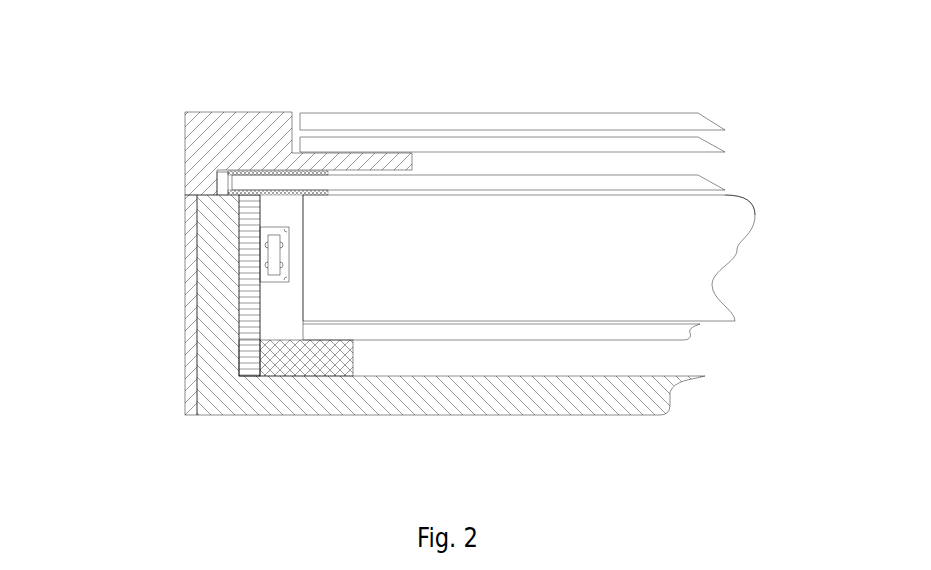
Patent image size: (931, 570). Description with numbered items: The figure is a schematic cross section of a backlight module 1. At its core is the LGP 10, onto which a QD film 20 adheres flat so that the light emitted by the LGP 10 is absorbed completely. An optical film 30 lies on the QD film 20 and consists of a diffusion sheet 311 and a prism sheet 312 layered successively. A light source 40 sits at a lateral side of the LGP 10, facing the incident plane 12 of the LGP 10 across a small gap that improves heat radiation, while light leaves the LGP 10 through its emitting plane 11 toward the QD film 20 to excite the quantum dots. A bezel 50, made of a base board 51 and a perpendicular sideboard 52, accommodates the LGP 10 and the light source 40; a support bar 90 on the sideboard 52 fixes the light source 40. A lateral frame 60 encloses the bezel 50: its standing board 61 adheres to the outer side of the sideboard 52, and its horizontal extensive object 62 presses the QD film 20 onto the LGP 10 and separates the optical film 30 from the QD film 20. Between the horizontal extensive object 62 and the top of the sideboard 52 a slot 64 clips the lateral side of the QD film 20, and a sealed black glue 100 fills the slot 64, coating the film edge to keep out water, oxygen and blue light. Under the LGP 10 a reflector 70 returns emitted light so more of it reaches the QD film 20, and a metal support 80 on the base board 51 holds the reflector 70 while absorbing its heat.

The backlight module 1 is at (447, 260).
The LGP 10 is at (737, 250).
The emitting plane 11 is at (753, 215).
The incident plane 12 is at (300, 296).
The QD film 20 is at (698, 175).
The optical film 30 is at (792, 95).
The diffusion sheet 311 is at (698, 137).
The prism sheet 312 is at (698, 113).
The light source 40 is at (262, 250).
The bezel 50 is at (118, 315).
The base board 51 is at (240, 396).
The sideboard 52 is at (212, 350).
The lateral frame 60 is at (108, 163).
The standing board 61 is at (187, 232).
The horizontal extensive object 62 is at (187, 186).
The slot 64 is at (218, 173).
The reflector 70 is at (700, 330).
The support 80 is at (332, 372).
The support bar 90 is at (250, 370).
The sealed black glue 100 is at (233, 172).